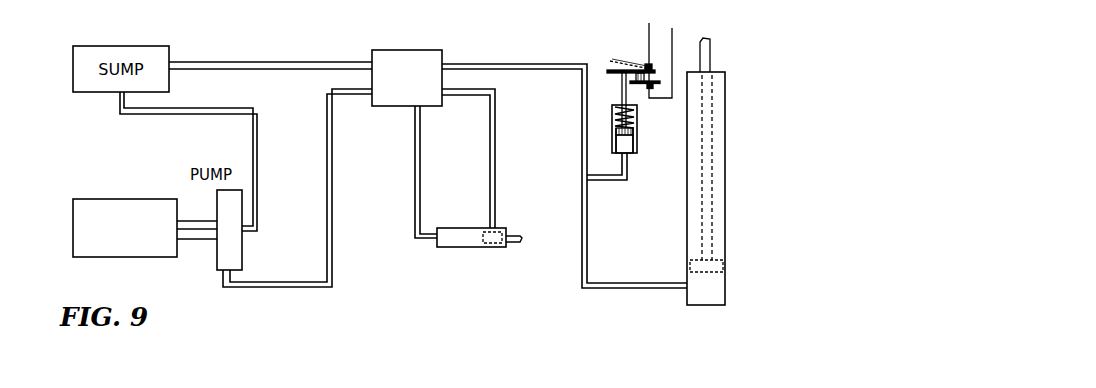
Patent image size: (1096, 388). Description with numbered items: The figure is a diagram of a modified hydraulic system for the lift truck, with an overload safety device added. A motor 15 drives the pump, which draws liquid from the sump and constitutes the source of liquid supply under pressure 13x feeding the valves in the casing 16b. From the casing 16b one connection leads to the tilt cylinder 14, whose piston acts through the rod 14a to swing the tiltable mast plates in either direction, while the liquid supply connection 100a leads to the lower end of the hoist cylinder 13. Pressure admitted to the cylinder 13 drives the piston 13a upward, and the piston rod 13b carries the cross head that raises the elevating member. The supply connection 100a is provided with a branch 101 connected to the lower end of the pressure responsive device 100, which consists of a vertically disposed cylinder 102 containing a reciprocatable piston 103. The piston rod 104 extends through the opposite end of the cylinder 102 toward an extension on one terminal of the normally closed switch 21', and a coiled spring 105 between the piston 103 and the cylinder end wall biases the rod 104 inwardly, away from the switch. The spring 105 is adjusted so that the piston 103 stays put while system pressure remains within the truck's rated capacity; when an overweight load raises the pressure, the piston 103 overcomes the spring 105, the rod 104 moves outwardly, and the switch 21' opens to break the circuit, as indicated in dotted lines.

The cylinder 13 is at (687, 297).
The piston 13a is at (724, 270).
The piston rod 13b is at (711, 58).
The source of liquid supply under pressure 13x is at (258, 288).
The cylinder 14 is at (461, 233).
The rod 14a is at (517, 235).
The motor 15 is at (126, 200).
The casing 16b is at (424, 57).
The switch 21' is at (639, 75).
The pressure responsive device 100 is at (682, 172).
The liquid supply connection 100a is at (586, 265).
The branch 101 is at (612, 184).
The cylinder 102 is at (611, 143).
The piston 103 is at (636, 131).
The piston rod 104 is at (620, 78).
The coiled spring 105 is at (613, 116).